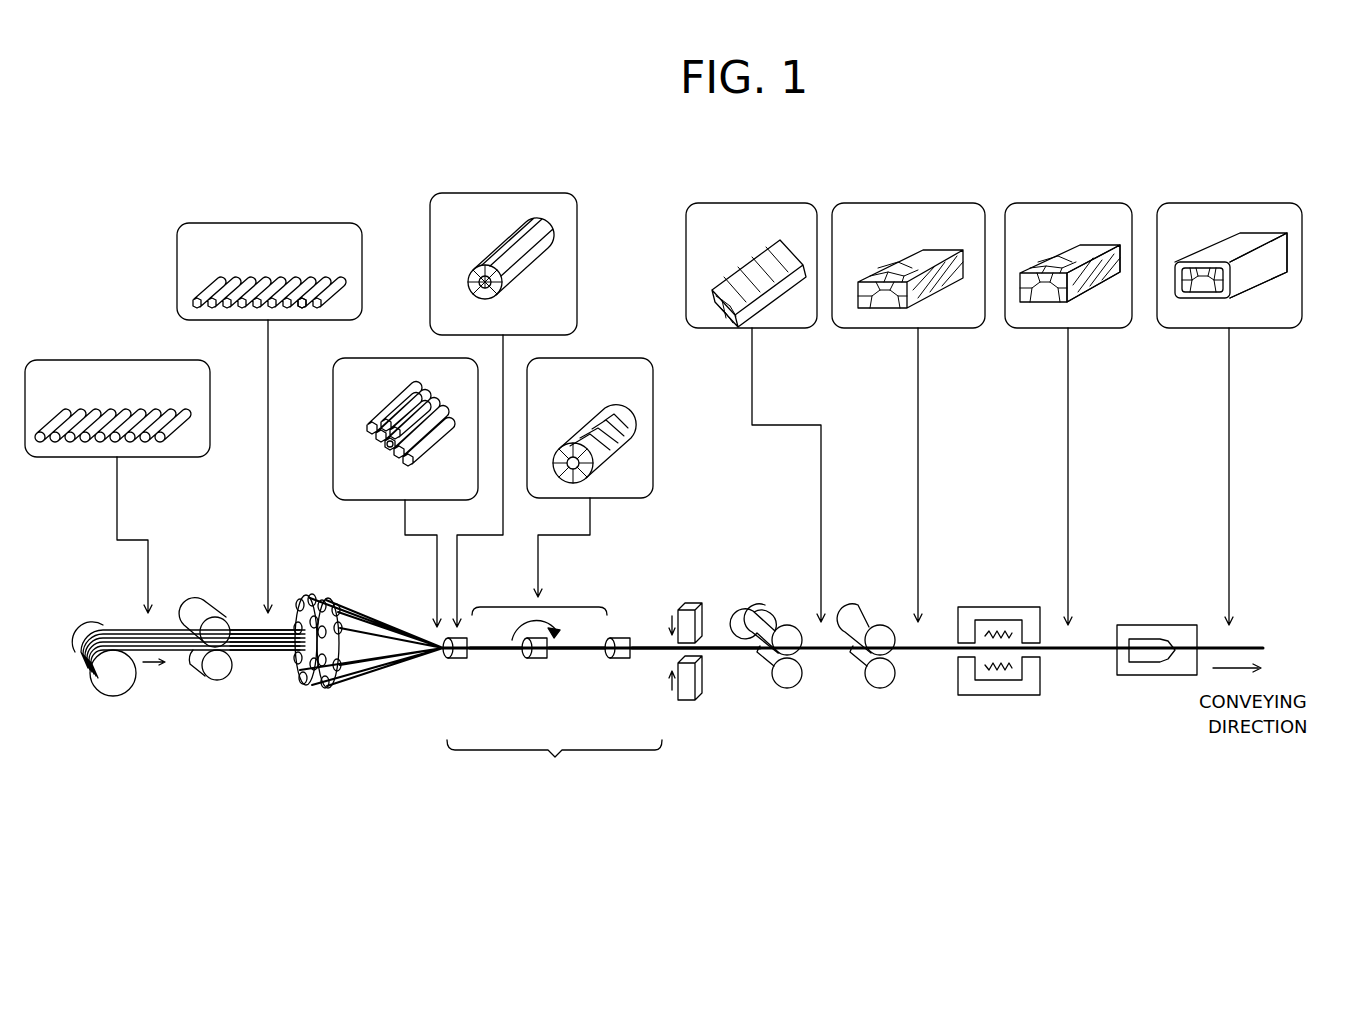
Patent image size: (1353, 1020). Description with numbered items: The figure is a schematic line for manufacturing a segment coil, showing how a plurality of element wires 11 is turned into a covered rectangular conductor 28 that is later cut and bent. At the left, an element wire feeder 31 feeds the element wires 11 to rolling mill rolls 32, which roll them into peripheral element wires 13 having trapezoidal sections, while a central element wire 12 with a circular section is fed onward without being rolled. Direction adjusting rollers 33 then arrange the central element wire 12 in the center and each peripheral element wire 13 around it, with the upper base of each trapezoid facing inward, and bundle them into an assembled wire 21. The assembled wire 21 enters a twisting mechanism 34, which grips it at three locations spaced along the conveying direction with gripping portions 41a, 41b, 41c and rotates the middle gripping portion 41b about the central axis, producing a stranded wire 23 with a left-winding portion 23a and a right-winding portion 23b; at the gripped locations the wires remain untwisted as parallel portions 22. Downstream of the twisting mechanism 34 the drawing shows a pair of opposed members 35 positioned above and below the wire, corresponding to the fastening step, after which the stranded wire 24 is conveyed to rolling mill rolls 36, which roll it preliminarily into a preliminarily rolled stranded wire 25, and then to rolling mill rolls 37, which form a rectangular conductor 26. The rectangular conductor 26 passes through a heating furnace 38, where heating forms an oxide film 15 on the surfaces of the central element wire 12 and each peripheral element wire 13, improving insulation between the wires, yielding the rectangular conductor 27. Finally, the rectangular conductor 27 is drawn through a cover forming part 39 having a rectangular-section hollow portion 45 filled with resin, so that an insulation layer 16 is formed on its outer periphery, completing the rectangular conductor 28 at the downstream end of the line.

The element wire 11 is at (100, 412).
The central element wire 12 is at (301, 276).
The peripheral element wire 13 is at (240, 278).
The oxide film 15 is at (1086, 280).
The insulation layer 16 is at (1256, 280).
The assembled wire 21 is at (384, 412).
The parallel portion 22 is at (484, 250).
The stranded wire 23 is at (578, 422).
The left-winding portion 23a is at (497, 655).
The right-winding portion 23b is at (585, 655).
The stranded wire after fastening step 24 is at (726, 634).
The preliminarily rolled stranded wire 25 is at (733, 259).
The rectangular conductor 26 is at (880, 259).
The rectangular conductor with oxide film 27 is at (1054, 254).
The rectangular conductor with insulation layer 28 is at (1204, 254).
The element wire feeder 31 is at (112, 698).
The rolling mill rolls 32 is at (214, 682).
The direction adjusting rollers 33 is at (384, 704).
The twisting mechanism 34 is at (552, 699).
The press dies 35 is at (696, 724).
The rolling mill rolls 36 is at (789, 690).
The rolling mill rolls 37 is at (881, 690).
The heating furnace 38 is at (1020, 697).
The cover forming part 39 is at (1152, 696).
The gripping portion 41a is at (457, 660).
The gripping portion 41b is at (537, 660).
The gripping portion 41c is at (620, 660).
The hollow portion 45 is at (1140, 663).